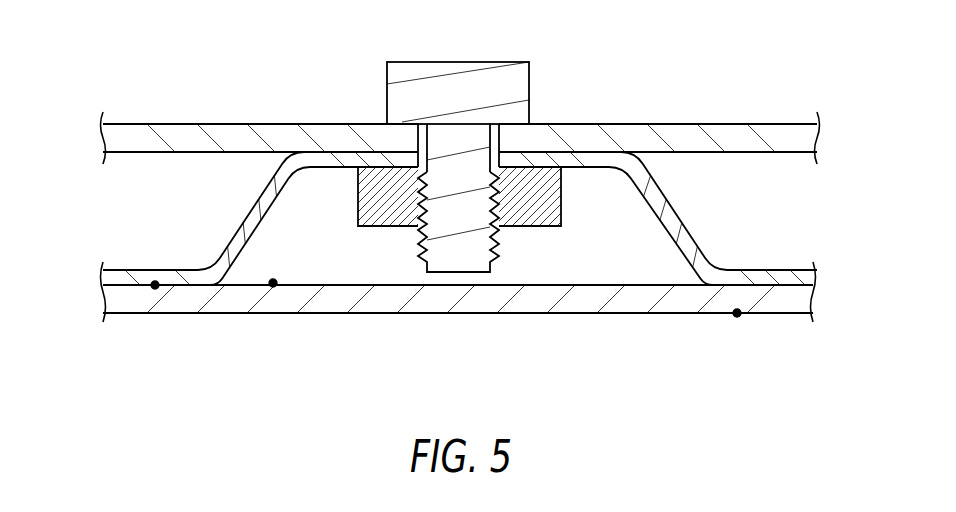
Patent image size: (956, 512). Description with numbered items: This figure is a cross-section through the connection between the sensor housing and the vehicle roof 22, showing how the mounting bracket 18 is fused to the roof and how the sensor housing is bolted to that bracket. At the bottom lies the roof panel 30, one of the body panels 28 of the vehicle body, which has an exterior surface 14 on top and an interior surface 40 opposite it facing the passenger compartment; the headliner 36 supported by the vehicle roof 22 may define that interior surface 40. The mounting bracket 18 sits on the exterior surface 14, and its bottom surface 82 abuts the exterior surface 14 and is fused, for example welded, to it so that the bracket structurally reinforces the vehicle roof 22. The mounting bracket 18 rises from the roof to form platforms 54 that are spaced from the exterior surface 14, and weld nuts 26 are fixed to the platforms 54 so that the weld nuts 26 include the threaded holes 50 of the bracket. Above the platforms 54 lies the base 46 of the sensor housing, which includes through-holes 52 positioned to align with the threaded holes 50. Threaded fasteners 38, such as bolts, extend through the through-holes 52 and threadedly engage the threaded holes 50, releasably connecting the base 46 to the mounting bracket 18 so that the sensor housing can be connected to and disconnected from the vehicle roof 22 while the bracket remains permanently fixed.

The exterior surface 14 is at (273, 280).
The mounting bracket 18 is at (763, 270).
The vehicle roof 22 is at (790, 313).
The weld nuts 26 is at (358, 203).
The body panels 28 is at (372, 313).
The roof panel 30 is at (105, 322).
The headliner 36 is at (608, 313).
The threaded fasteners 38 is at (529, 82).
The interior surface 40 is at (737, 313).
The base 46 is at (762, 124).
The threaded holes 50 is at (499, 207).
The through-holes 52 is at (500, 142).
The platforms 54 is at (582, 167).
The bottom surface 82 is at (155, 285).